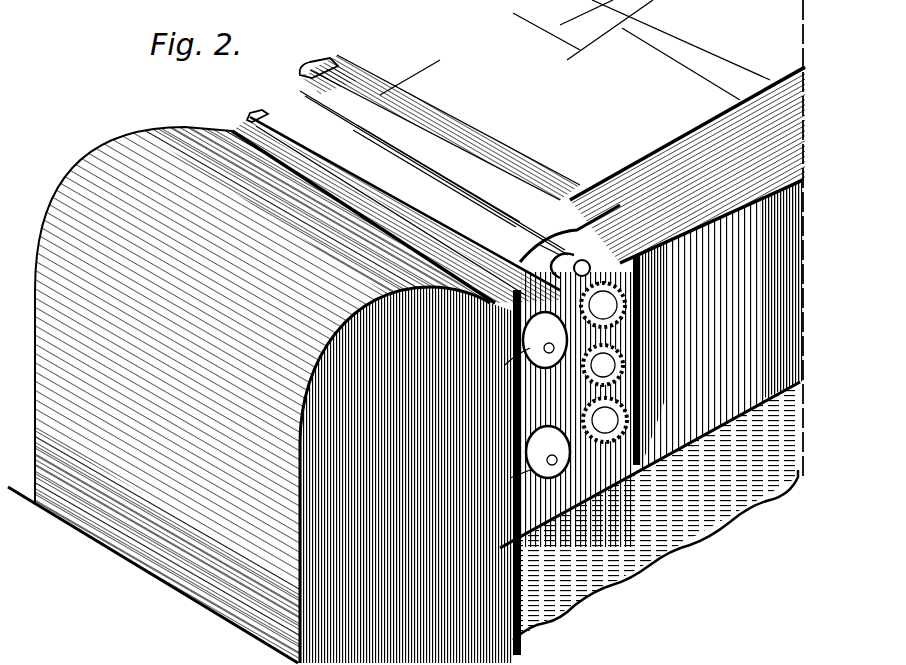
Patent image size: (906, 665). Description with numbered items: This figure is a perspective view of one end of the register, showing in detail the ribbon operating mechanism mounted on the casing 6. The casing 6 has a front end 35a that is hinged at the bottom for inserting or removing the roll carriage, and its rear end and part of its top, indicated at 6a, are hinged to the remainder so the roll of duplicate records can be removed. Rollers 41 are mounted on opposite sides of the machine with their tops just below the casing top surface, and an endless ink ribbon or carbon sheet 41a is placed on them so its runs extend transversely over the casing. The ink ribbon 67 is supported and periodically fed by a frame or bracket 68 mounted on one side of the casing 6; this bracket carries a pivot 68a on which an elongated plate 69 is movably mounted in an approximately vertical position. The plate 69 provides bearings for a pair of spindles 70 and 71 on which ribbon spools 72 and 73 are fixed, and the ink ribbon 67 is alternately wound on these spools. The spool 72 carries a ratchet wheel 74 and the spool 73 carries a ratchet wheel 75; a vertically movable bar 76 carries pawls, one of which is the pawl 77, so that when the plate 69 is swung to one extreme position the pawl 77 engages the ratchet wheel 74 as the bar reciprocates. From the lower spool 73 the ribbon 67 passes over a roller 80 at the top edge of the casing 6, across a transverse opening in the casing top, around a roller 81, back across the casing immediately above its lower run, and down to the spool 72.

The casing 6 is at (651, 274).
The hinged rear end and top part of casing 6a is at (453, 332).
The front end of casing 35a is at (561, 113).
The rollers 41 is at (322, 60).
The endless ink ribbon or carbon sheet 41a is at (557, 148).
The ink ribbon 67 is at (409, 190).
The frame or bracket 68 is at (632, 374).
The pivot 68a is at (615, 384).
The elongated plate 69 is at (612, 362).
The spindle 70 is at (530, 348).
The spindle 71 is at (548, 458).
The ribbon spool 72 is at (545, 340).
The ribbon spool 73 is at (548, 452).
The ratchet wheel 74 is at (620, 318).
The ratchet wheel 75 is at (622, 420).
The vertically movable bar 76 is at (570, 233).
The pawl 77 is at (575, 276).
The roller 80 is at (512, 284).
The roller 81 is at (250, 117).